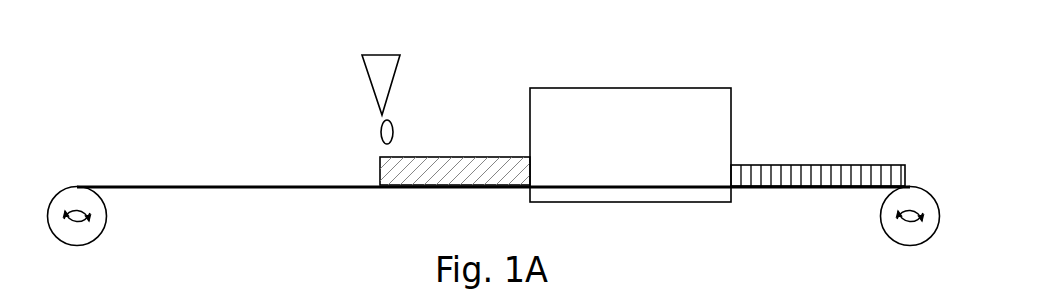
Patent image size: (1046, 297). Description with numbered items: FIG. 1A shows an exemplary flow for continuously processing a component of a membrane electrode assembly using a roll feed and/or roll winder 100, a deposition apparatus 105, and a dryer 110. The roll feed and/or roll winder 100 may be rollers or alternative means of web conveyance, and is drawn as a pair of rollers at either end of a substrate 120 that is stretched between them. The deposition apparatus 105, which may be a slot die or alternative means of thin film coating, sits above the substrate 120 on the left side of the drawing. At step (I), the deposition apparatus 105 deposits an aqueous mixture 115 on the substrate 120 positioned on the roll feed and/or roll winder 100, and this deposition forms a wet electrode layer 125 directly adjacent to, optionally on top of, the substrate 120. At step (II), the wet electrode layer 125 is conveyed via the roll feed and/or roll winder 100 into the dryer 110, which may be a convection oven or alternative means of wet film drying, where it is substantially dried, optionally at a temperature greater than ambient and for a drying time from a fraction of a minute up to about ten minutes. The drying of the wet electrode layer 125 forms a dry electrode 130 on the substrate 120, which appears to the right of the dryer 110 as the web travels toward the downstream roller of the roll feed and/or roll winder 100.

The roll feed and/or roll winder 100 is at (77, 182).
The substrate 120 is at (194, 184).
The deposition apparatus 105 is at (361, 71).
The aqueous mixture 115 is at (378, 138).
The wet electrode layer 125 is at (466, 152).
The dryer 110 is at (651, 76).
The dry electrode 130 is at (846, 150).
The step I is at (222, 88).
The step II is at (740, 80).